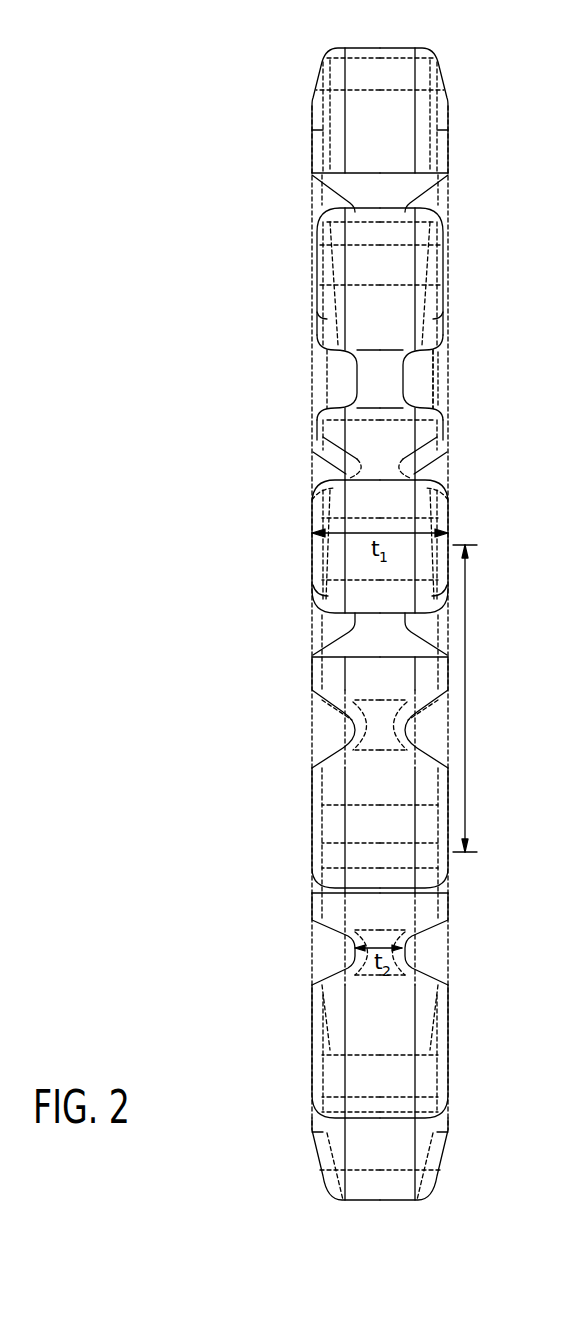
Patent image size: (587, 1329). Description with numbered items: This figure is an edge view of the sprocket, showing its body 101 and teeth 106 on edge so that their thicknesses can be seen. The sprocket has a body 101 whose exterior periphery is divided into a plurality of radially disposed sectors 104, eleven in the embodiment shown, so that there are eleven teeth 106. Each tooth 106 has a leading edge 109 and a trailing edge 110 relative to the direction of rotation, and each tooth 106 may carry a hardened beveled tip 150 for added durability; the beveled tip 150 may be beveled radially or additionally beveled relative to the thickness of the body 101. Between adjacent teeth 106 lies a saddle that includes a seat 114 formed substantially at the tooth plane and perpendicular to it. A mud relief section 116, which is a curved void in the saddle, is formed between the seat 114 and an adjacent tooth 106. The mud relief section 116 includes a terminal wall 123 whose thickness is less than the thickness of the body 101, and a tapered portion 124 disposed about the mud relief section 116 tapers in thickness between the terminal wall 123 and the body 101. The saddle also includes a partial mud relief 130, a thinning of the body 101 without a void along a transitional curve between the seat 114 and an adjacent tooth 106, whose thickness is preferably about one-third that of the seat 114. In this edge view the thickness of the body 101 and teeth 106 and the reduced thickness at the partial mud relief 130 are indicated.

The beveled tip 150 is at (370, 68).
The tooth 106 is at (435, 293).
The terminal wall 123 is at (377, 379).
The tapered portion 124 is at (427, 372).
The mud relief section 116 is at (300, 394).
The seat 114 is at (393, 420).
The leading edge 109 is at (330, 615).
The sector 104 is at (472, 698).
The partial mud relief 130 is at (356, 730).
The body 101 is at (312, 827).
The trailing edge 110 is at (360, 1055).